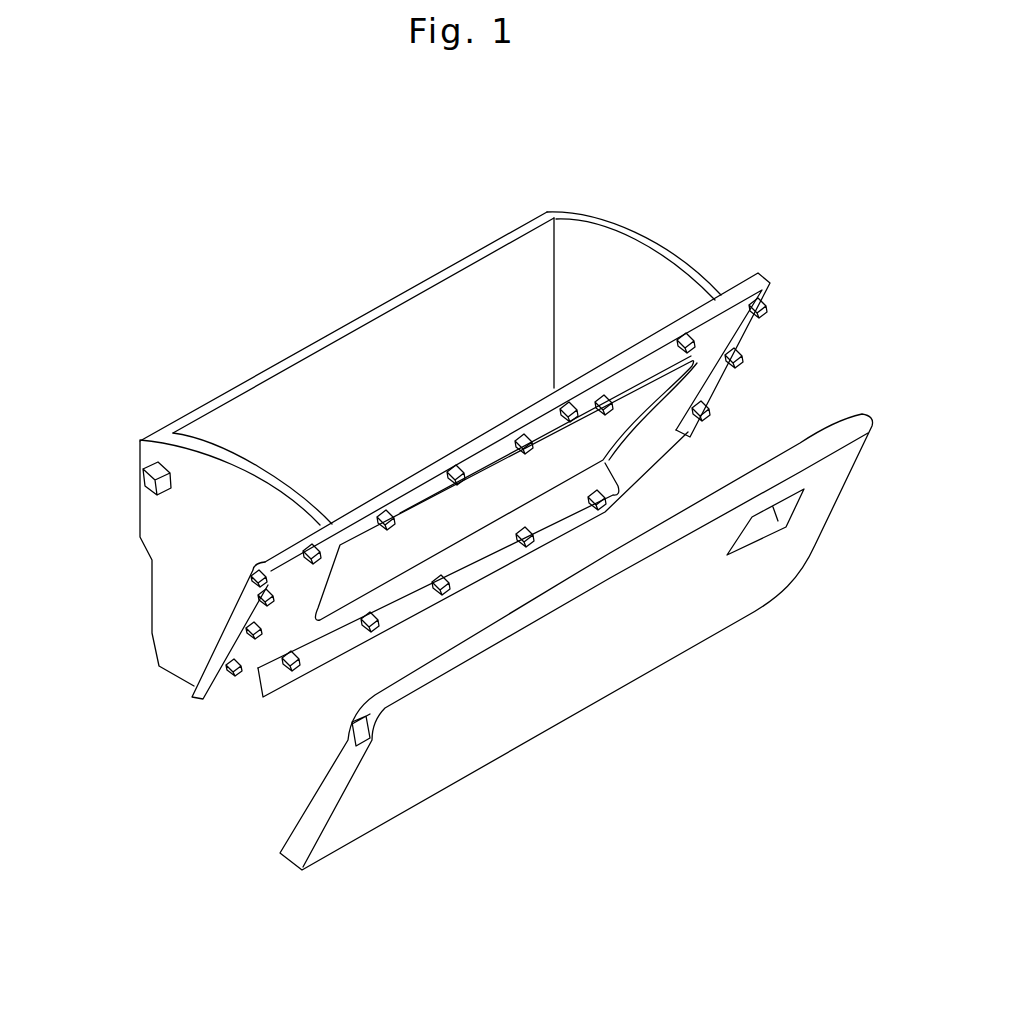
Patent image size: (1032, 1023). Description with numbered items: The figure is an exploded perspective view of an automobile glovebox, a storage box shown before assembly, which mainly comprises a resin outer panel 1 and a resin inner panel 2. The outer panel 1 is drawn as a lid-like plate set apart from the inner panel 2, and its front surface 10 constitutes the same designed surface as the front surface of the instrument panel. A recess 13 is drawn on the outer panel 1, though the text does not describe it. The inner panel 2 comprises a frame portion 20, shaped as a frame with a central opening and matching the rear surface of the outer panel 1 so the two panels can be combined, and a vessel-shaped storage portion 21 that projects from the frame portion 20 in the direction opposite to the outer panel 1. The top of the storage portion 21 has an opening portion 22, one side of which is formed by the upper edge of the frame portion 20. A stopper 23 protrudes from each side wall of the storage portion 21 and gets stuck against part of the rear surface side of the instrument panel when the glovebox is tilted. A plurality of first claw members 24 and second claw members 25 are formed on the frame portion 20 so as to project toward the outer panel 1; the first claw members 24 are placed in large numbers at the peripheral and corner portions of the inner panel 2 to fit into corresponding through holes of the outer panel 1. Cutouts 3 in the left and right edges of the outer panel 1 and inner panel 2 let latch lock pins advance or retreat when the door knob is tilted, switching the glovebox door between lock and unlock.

The outer panel 1 is at (842, 477).
The inner panel 2 is at (382, 263).
The cutout 3 is at (255, 577).
The front surface 10 is at (623, 652).
The handle recess 13 is at (759, 527).
The frame portion 20 is at (687, 433).
The storage portion 21 is at (632, 228).
The opening portion 22 is at (448, 384).
The stopper 23 is at (143, 482).
The first claw member 24 is at (437, 578).
The second claw member 25 is at (533, 441).